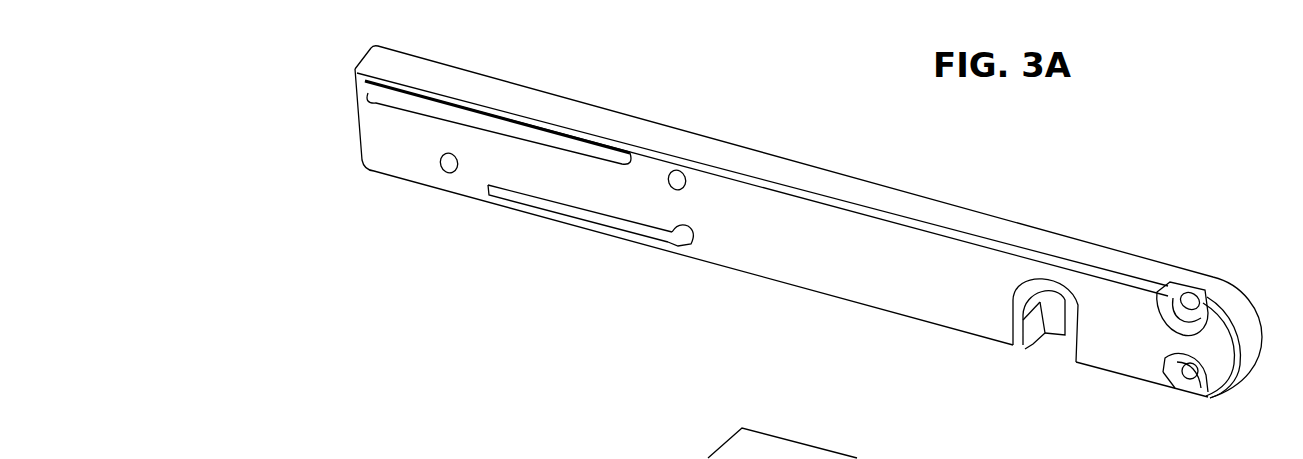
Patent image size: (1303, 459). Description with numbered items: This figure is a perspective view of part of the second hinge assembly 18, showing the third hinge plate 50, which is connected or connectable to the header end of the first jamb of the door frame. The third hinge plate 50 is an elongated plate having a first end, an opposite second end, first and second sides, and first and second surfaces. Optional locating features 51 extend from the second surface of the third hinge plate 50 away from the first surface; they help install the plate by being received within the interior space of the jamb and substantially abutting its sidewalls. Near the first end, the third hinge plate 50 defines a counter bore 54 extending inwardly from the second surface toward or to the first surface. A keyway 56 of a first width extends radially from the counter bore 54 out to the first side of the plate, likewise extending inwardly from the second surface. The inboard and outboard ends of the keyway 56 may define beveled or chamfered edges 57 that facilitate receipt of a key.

The second hinge assembly 18 is at (270, 419).
The third hinge plate 50 is at (821, 183).
The locating features 51 is at (356, 93).
The counter bore 54 is at (1040, 303).
The keyway 56 is at (1058, 362).
The beveled or chamfered edges 57 is at (1065, 298).